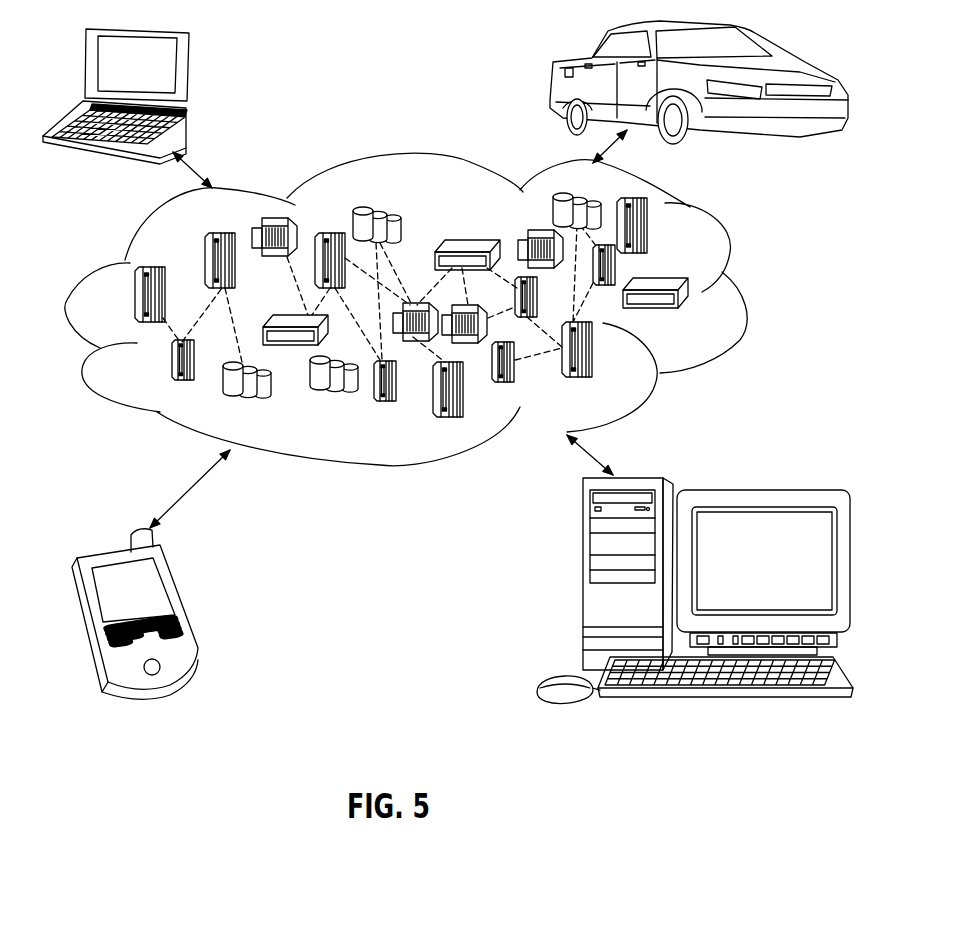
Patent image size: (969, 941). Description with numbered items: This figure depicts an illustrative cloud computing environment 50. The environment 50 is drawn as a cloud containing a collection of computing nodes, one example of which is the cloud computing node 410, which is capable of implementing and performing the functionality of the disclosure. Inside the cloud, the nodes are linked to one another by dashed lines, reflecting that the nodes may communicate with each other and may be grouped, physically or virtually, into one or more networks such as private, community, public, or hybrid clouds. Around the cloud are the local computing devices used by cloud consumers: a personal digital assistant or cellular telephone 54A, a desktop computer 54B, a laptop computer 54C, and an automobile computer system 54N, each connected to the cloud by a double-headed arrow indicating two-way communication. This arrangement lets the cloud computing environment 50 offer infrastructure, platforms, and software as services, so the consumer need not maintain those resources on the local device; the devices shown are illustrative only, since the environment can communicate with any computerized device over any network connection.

The cloud computing environment 50 is at (733, 257).
The cloud computing node 410 is at (712, 312).
The personal digital assistant or cellular telephone 54A is at (185, 603).
The desktop computer 54B is at (583, 582).
The laptop computer 54C is at (190, 72).
The automobile computer system 54N is at (553, 78).